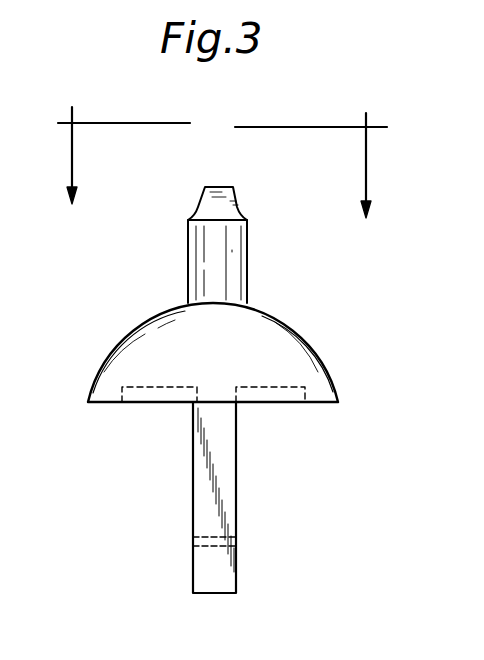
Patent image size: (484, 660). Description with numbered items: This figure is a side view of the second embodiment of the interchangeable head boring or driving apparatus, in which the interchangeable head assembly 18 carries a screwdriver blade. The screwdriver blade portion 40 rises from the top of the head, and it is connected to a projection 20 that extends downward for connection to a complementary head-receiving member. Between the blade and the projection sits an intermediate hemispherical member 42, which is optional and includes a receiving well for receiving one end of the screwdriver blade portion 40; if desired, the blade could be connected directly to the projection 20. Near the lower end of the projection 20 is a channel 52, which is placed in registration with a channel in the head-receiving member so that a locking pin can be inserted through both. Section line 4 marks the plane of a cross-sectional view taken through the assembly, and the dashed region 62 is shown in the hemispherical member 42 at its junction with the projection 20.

The section line 4- 4 is at (222, 152).
The screwdriver blade portion 40 is at (202, 243).
The interchangeable head assembly 18 is at (100, 344).
The intermediate hemispherical member 42 is at (318, 381).
The recess 62 is at (270, 389).
The projection 20 is at (197, 500).
The channel 52 is at (223, 537).